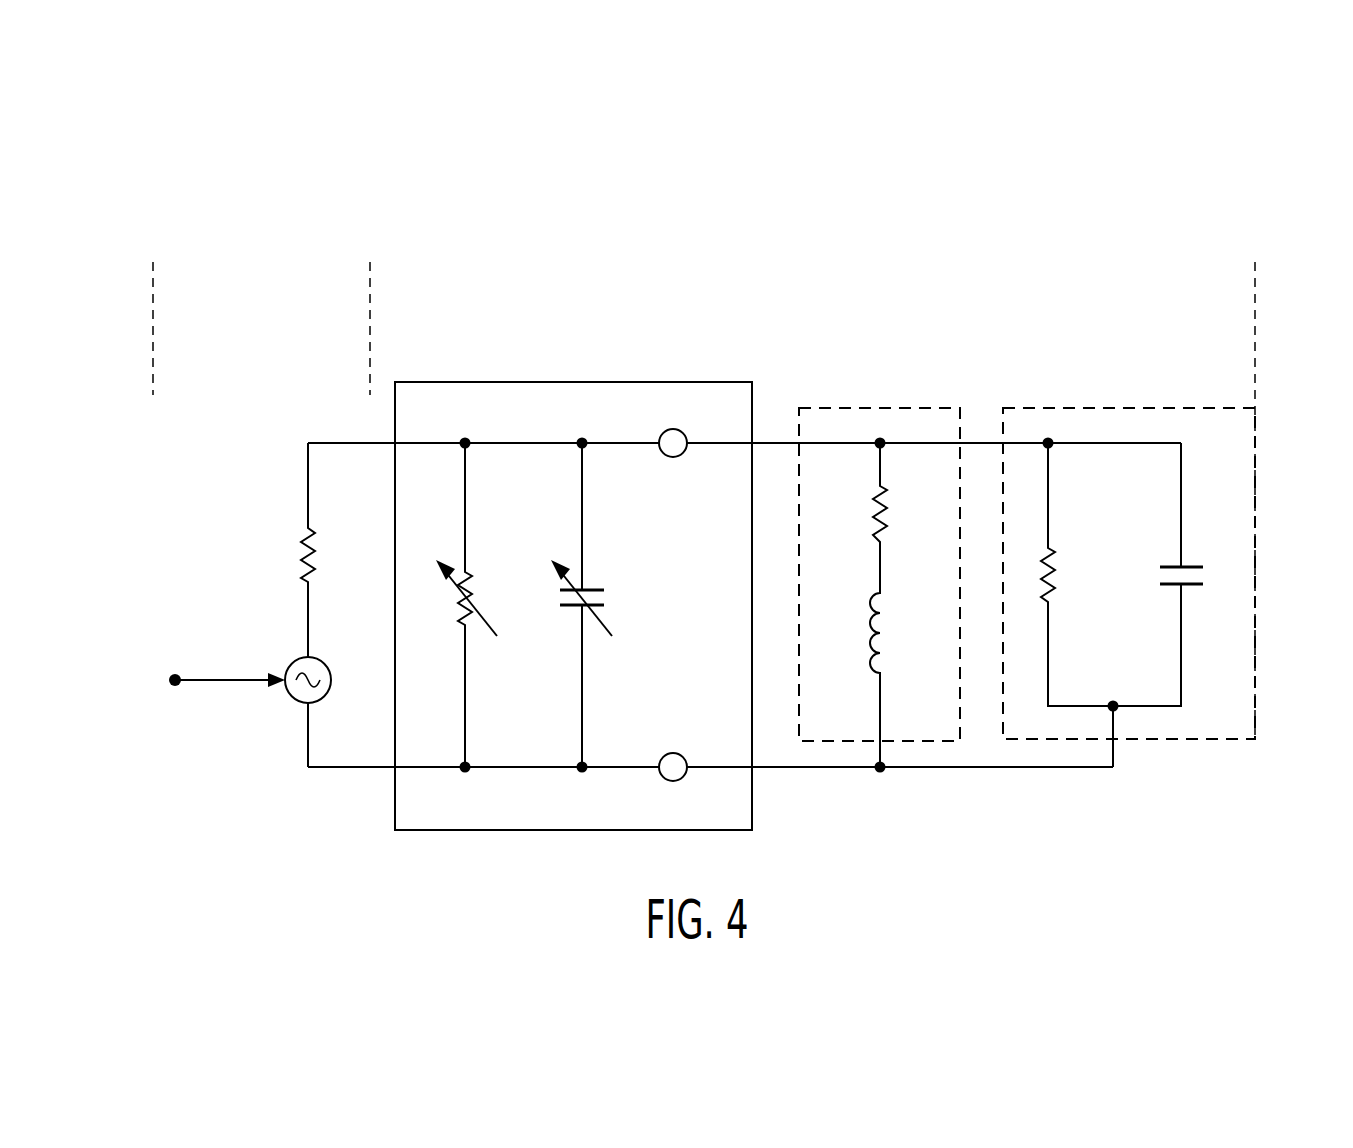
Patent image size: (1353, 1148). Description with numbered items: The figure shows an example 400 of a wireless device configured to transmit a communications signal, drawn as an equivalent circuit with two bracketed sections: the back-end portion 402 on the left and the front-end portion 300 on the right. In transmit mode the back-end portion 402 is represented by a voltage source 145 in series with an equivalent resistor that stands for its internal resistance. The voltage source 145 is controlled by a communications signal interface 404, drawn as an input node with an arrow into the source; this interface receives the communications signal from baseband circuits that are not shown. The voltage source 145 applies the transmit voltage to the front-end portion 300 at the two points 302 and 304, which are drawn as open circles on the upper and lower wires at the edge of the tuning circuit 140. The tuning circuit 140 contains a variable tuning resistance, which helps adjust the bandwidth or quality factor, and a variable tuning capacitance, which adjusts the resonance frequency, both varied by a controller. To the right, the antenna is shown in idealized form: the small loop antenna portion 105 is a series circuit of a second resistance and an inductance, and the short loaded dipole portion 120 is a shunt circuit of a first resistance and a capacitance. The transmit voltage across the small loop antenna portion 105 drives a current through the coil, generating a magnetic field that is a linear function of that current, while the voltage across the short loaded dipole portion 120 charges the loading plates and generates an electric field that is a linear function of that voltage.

The example of a wireless device configured to transmit a communications signal 400 is at (390, 170).
The back-end portion 402 is at (153, 256).
The front-end portion 300 is at (1255, 256).
The tuning circuit 140 is at (697, 382).
The point 302 is at (673, 457).
The point 304 is at (673, 752).
The small loop antenna portion 105 is at (940, 408).
The short loaded dipole portion 120 is at (1190, 408).
The communications signal interface 404 is at (175, 672).
The voltage source 145 is at (292, 699).